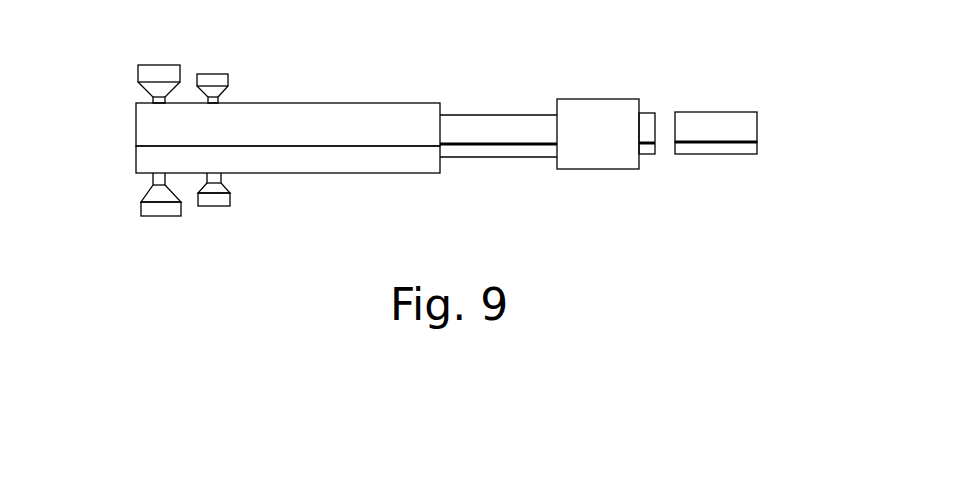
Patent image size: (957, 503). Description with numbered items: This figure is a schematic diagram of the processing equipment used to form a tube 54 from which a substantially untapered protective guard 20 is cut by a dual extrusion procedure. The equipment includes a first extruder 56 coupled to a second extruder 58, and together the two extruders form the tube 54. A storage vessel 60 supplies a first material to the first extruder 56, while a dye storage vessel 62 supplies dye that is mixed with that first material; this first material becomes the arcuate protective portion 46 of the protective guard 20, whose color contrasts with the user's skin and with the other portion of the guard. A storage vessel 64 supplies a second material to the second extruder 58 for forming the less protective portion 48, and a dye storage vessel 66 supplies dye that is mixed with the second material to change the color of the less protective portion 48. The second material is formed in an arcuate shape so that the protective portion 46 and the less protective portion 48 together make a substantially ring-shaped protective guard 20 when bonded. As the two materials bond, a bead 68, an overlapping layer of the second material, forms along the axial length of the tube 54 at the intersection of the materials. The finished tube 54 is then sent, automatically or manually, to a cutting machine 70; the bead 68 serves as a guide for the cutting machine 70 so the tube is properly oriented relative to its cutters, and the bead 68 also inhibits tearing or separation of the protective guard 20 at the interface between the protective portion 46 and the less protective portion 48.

The protective guard 20 is at (760, 74).
The protective portion 46 is at (696, 125).
The less protective portion 48 is at (713, 160).
The tube 54 is at (491, 128).
The first extruder 56 is at (303, 117).
The second extruder 58 is at (326, 163).
The storage vessel 60 is at (150, 72).
The dye storage vessel 62 is at (203, 80).
The storage vessel 64 is at (156, 210).
The dye storage vessel 66 is at (215, 202).
The bead 68 is at (510, 148).
The cutting machine 70 is at (614, 147).